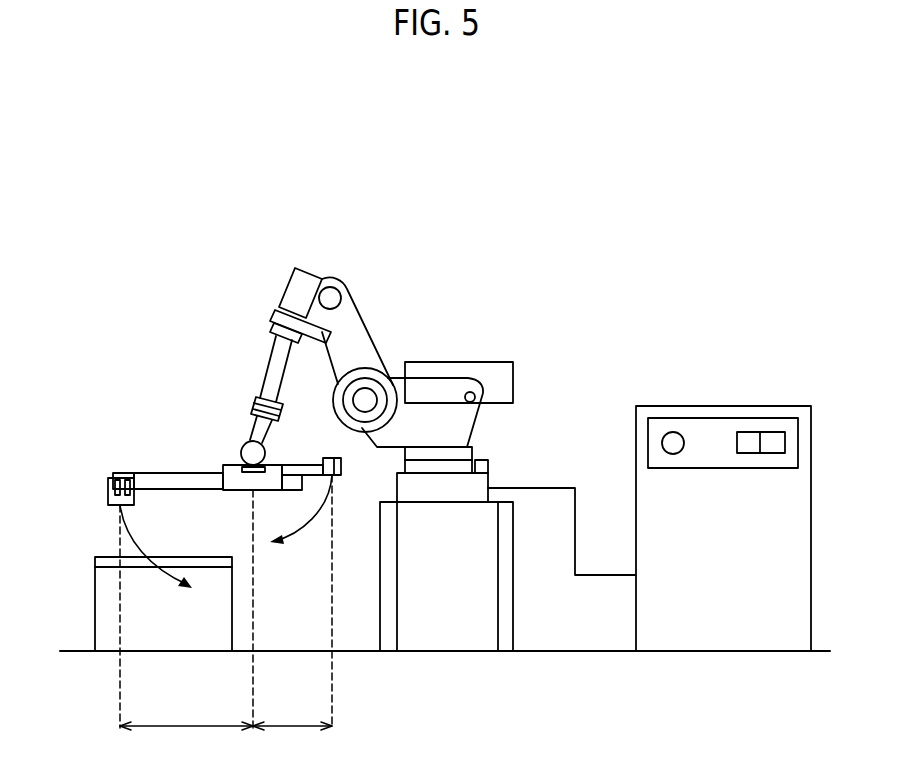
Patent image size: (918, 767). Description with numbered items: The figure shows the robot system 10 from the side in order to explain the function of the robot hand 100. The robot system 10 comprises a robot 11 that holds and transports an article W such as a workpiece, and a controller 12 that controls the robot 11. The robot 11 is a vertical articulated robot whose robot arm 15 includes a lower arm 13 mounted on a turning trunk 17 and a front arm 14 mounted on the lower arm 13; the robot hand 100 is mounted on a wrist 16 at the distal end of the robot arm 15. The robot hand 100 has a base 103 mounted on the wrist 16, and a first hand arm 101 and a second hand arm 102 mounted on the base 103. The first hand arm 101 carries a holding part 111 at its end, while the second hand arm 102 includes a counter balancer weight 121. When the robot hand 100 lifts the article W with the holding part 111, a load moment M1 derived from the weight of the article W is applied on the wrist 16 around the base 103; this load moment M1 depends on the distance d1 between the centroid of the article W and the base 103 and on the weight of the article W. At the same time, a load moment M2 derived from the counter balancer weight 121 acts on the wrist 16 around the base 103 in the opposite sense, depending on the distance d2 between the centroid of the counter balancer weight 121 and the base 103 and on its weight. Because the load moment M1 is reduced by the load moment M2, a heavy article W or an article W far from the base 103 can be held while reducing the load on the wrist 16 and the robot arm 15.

The robot system 10 is at (694, 158).
The robot 11 is at (253, 171).
The controller 12 is at (725, 406).
The lower arm 13 is at (338, 352).
The front arm 14 is at (265, 372).
The robot arm 15 is at (265, 219).
The wrist 16 is at (247, 450).
The turning trunk 17 is at (458, 422).
The robot hand 100 is at (148, 418).
The first hand arm 101 is at (189, 468).
The second hand arm 102 is at (311, 457).
The base 103 is at (247, 472).
The holding part 111 is at (108, 483).
The counter balancer weight 121 is at (341, 467).
The article W is at (108, 497).
The load moment M1 is at (137, 542).
The load moment M2 is at (302, 530).
The distance d1 is at (186, 713).
The distance d2 is at (292, 714).